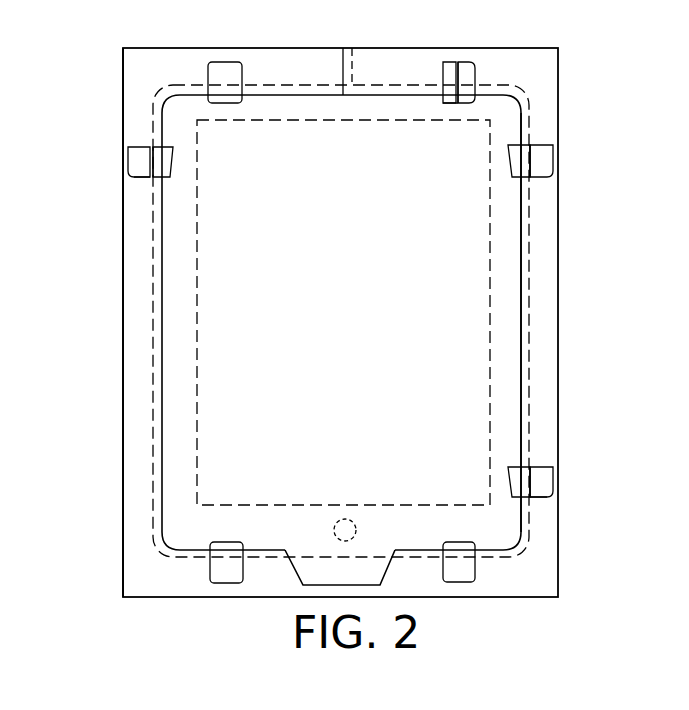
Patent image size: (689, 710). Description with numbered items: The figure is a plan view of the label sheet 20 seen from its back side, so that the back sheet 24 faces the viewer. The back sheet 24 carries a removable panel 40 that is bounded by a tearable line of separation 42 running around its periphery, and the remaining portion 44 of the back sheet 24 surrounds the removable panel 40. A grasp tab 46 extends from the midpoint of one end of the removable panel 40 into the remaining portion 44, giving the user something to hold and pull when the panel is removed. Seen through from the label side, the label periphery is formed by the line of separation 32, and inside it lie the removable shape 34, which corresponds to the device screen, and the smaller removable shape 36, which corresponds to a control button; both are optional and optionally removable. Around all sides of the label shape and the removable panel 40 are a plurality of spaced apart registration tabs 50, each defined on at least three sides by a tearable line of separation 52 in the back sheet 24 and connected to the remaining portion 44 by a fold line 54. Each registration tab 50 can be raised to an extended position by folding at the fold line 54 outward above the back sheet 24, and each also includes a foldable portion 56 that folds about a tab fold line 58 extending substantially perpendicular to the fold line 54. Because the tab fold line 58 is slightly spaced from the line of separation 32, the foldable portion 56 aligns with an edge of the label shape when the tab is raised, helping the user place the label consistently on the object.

The label sheet 20 is at (598, 156).
The back sheet 24 is at (552, 263).
The line of separation 32 is at (153, 278).
The removable shape 34 is at (205, 337).
The removable shape 36 is at (345, 519).
The removable panel 40 is at (172, 238).
The tearable line of separation 42 is at (520, 395).
The remaining portion 44 is at (128, 407).
The grasp tab 46 is at (307, 573).
The registration tab 50 is at (338, 292).
The tearable line of separation 52 is at (168, 173).
The fold line 54 is at (140, 146).
The foldable portion 56 is at (168, 163).
The tab fold line 58 is at (150, 170).